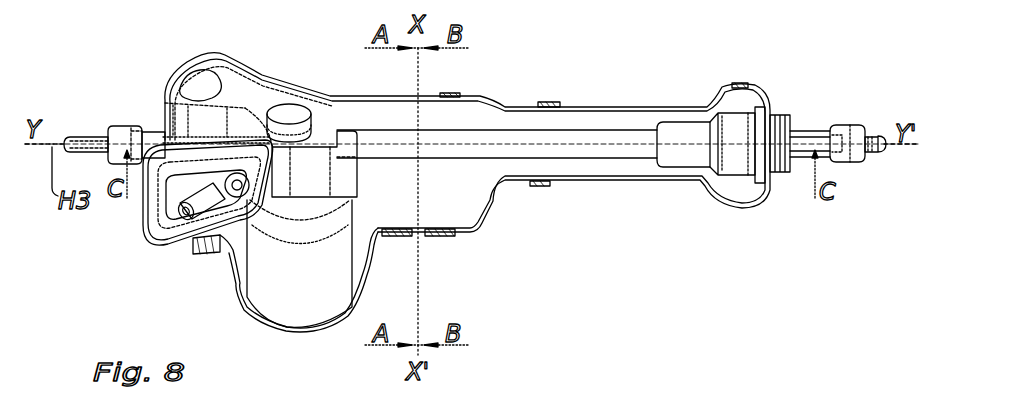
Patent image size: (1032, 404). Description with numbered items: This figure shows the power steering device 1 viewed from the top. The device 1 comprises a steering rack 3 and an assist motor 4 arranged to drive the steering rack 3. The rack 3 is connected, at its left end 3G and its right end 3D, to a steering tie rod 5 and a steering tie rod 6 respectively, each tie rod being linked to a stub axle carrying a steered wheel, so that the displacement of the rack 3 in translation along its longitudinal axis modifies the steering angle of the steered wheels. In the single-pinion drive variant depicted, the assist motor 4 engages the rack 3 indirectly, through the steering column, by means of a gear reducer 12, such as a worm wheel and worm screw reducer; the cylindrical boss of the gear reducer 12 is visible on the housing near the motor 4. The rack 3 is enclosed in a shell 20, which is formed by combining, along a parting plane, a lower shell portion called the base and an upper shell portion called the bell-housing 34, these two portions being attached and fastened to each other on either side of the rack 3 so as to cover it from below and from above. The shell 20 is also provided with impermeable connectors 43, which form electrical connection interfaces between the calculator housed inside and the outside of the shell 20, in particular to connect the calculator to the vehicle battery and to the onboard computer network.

The power steering device 1 is at (627, 66).
The gear reducer 12 is at (292, 94).
The shell 20 is at (575, 172).
The steering rack 3 is at (152, 133).
The left end of the rack 3G is at (119, 130).
The right end of the rack 3D is at (847, 162).
The bell-housing 34 is at (480, 212).
The assist motor 4 is at (302, 292).
The impermeable connectors 43 is at (392, 238).
The steering tie rod 5 is at (82, 140).
The steering tie rod 6 is at (878, 134).